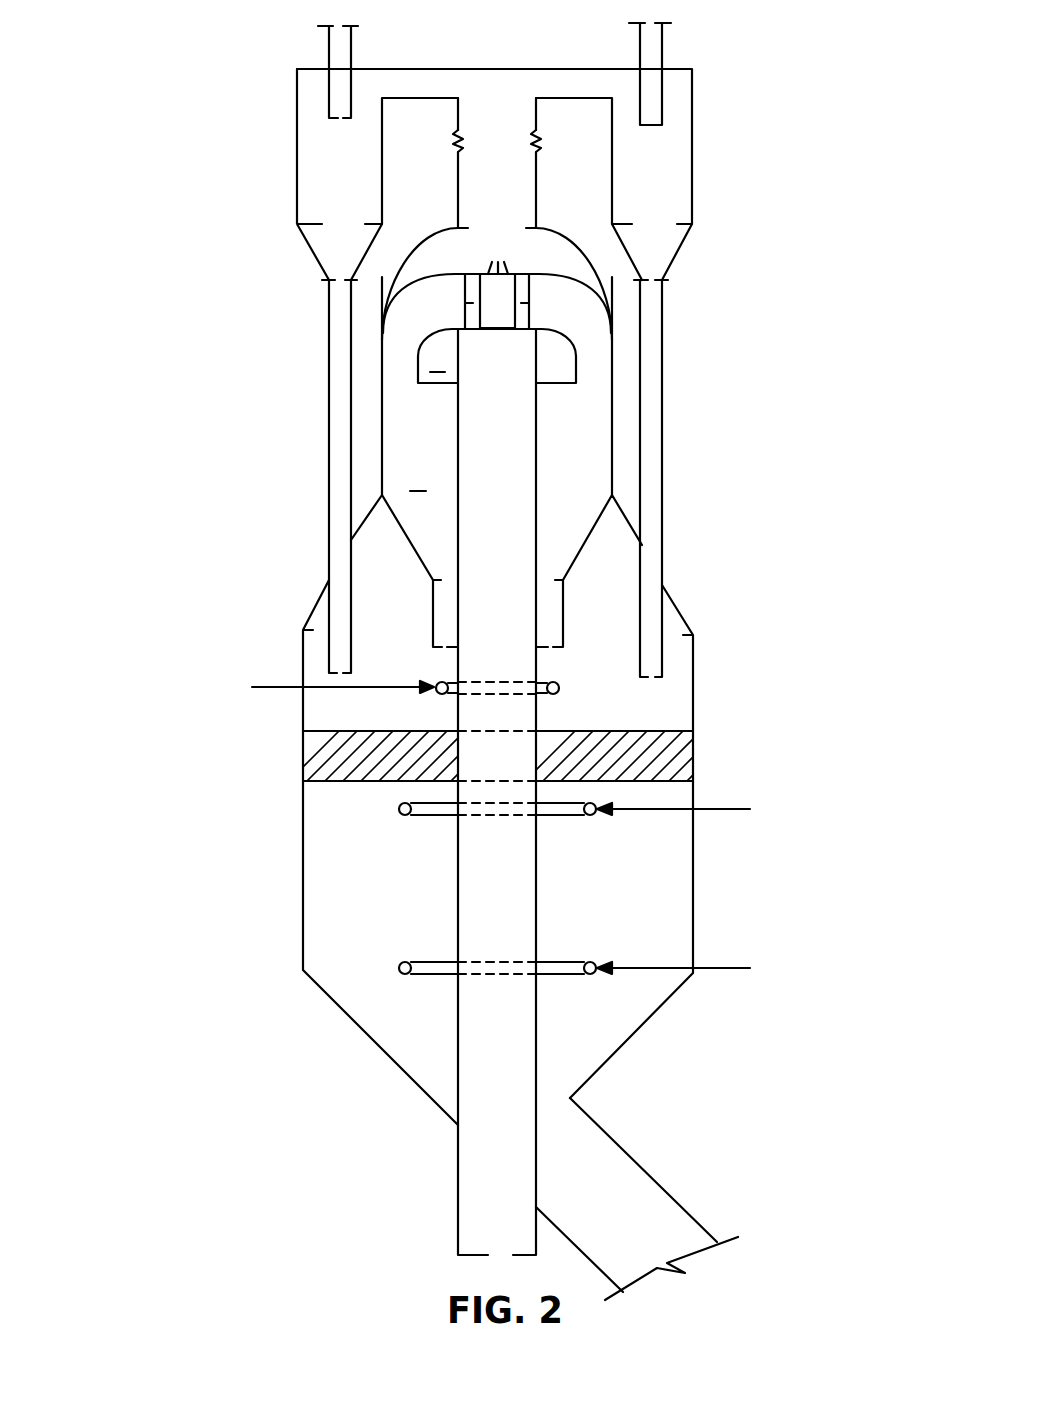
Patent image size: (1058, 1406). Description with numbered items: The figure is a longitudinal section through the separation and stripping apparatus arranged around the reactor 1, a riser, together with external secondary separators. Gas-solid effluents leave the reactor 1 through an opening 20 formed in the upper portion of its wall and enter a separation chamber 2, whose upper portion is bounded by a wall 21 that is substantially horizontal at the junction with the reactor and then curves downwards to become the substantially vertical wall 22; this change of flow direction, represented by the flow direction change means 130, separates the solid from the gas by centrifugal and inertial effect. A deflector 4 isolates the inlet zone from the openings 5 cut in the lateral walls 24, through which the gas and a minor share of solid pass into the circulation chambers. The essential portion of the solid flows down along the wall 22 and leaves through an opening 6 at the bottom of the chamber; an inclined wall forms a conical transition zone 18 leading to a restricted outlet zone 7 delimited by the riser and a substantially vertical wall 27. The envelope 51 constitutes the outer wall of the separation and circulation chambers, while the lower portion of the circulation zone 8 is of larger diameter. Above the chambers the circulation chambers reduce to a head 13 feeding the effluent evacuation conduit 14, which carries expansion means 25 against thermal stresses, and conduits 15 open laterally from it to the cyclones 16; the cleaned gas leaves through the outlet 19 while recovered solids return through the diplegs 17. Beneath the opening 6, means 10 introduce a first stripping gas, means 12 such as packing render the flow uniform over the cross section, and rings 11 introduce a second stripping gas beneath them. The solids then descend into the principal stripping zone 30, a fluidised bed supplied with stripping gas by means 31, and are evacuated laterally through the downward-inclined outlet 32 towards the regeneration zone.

The reactor 1 is at (477, 1197).
The separation chamber 2 is at (497, 296).
The deflector 4 is at (462, 318).
The opening 5 is at (497, 356).
The opening 6 is at (450, 650).
The zone 7 is at (440, 627).
The lower portion of the circulation zone 8 is at (683, 697).
The means for introducing a gas 10 is at (560, 680).
The rings 11 is at (592, 815).
The means for rendering the flow uniform 12 is at (682, 760).
The head 13 is at (537, 233).
The effluent evacuation conduit 14 is at (518, 183).
The conduit 15 is at (465, 78).
The cyclone 16 is at (303, 143).
The dipleg 17 is at (655, 495).
The conical transition zone 18 is at (418, 563).
The outlet 19 is at (335, 43).
The opening 20 is at (497, 283).
The wall 21 is at (418, 284).
The wall 22 is at (615, 407).
The lateral wall 24 is at (588, 447).
The expansion means 25 is at (452, 142).
The wall 27 is at (565, 612).
The principal stripping zone 30 is at (673, 857).
The means for introducing a stripping gas 31 is at (590, 962).
The outlet 32 is at (637, 1185).
The envelope 51 is at (617, 367).
The flow direction change means 130 is at (420, 290).